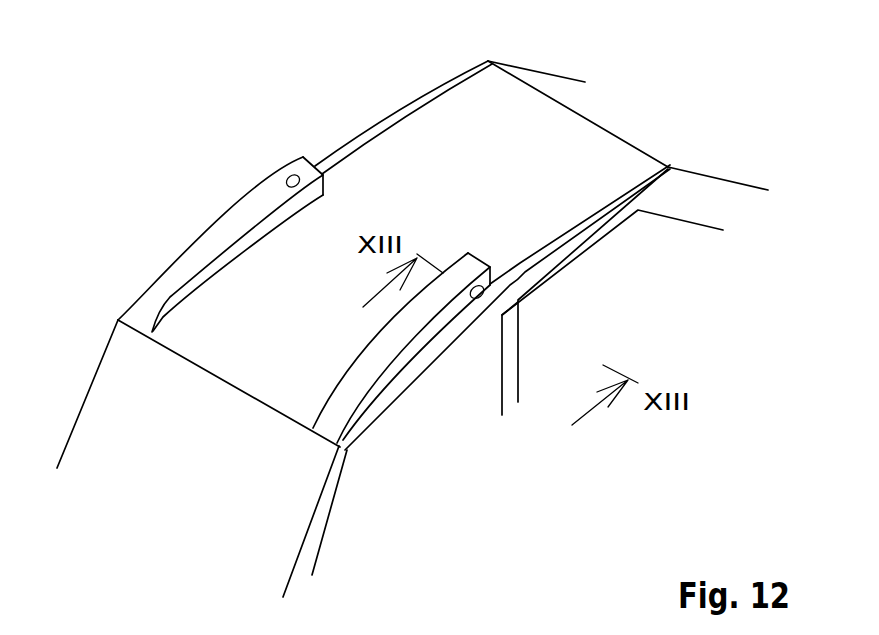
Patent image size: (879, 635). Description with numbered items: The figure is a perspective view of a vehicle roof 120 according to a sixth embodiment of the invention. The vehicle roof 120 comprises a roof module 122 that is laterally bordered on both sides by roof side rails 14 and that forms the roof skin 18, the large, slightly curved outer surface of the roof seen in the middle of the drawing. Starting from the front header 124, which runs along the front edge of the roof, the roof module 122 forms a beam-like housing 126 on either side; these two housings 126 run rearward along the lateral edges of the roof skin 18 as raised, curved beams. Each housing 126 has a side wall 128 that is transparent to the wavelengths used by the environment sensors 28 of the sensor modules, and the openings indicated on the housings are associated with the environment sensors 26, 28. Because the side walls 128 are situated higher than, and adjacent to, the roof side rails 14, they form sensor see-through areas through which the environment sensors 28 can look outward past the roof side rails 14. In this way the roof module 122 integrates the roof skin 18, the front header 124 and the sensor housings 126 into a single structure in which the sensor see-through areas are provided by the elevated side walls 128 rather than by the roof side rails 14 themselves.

The roof side rail 14 is at (354, 140).
The roof skin 18 is at (508, 183).
The fastening opening 26 is at (373, 310).
The environment sensor 28 is at (287, 180).
The vehicle roof 120 is at (415, 86).
The roof module 122 is at (598, 110).
The front header 124 is at (230, 383).
The beam-like housing 126 is at (213, 240).
The side wall 128 is at (433, 330).